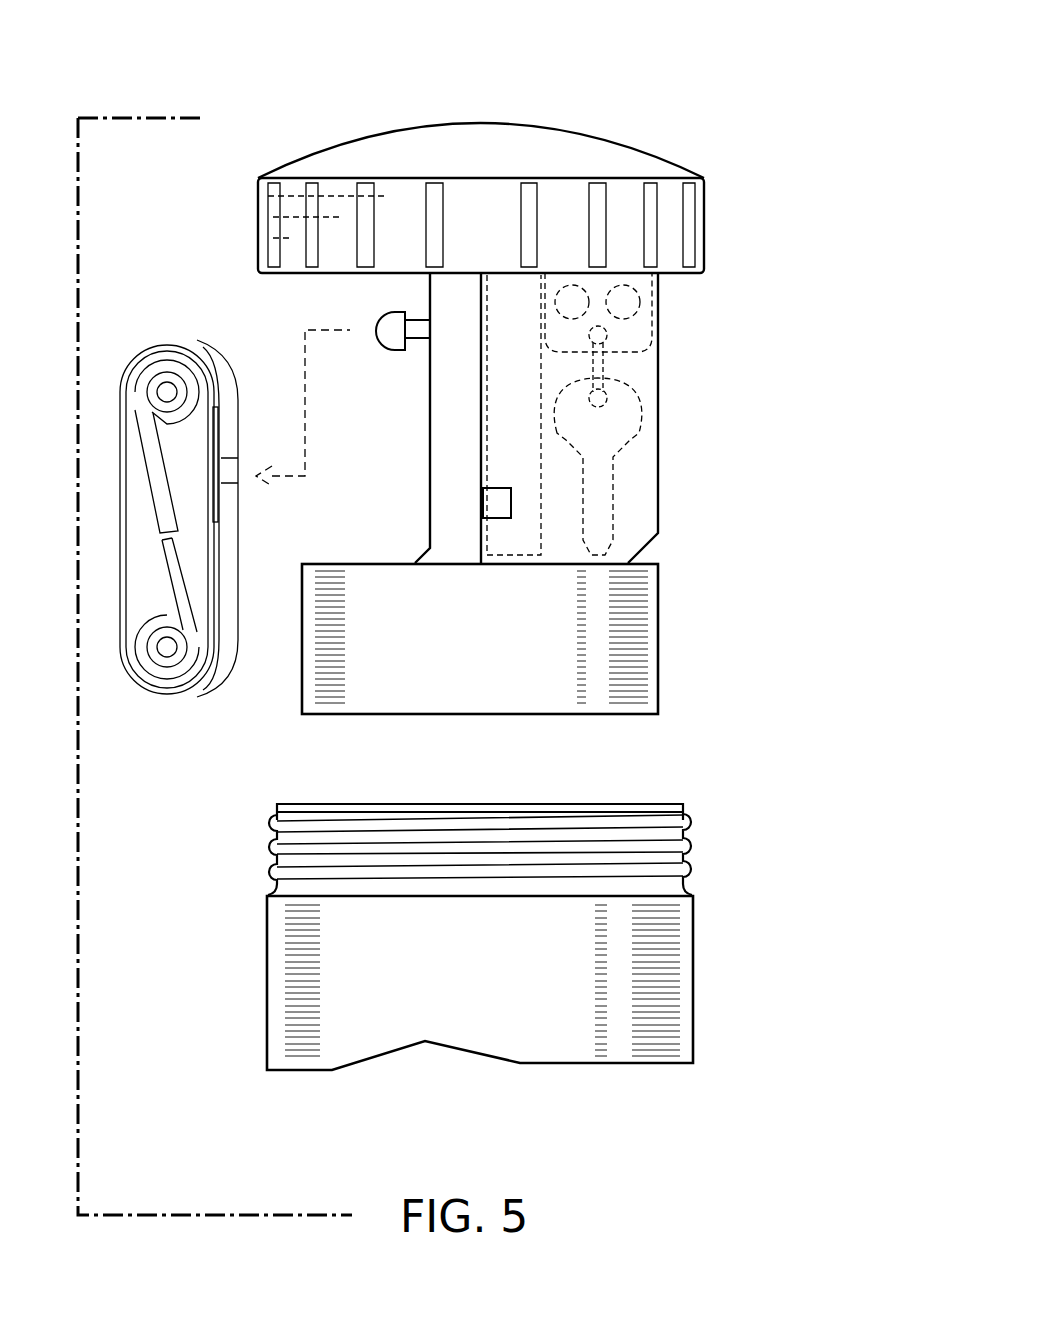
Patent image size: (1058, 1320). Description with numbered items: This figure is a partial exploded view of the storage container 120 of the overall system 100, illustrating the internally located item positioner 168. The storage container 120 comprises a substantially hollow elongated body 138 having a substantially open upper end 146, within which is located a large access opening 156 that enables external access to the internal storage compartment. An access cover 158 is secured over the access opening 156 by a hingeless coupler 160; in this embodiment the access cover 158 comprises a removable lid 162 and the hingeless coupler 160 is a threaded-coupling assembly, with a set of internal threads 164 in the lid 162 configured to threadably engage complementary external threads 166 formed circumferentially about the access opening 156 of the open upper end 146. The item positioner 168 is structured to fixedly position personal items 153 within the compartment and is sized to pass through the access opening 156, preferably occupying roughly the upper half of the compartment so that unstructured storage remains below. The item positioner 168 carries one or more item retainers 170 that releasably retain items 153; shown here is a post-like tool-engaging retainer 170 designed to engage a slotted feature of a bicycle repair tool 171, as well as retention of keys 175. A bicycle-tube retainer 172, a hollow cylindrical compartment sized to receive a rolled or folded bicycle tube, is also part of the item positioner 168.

The container assembly 100 is at (250, 62).
The storage container 120 is at (205, 82).
The removable lid 162 is at (648, 152).
The access cover 158 is at (738, 212).
The internal threads 164 is at (283, 198).
The item positioner 168 is at (698, 482).
The item retainer 170 is at (393, 352).
The personal items 153 is at (485, 550).
The keys 175 is at (640, 352).
The bicycle repair tool 171 is at (178, 345).
The bicycle-tube retainer 172 is at (658, 669).
The hingeless coupler 160 is at (494, 888).
The access opening 156 is at (494, 800).
The open upper end 146 is at (683, 805).
The external threads 166 is at (272, 846).
The elongated body 138 is at (693, 963).